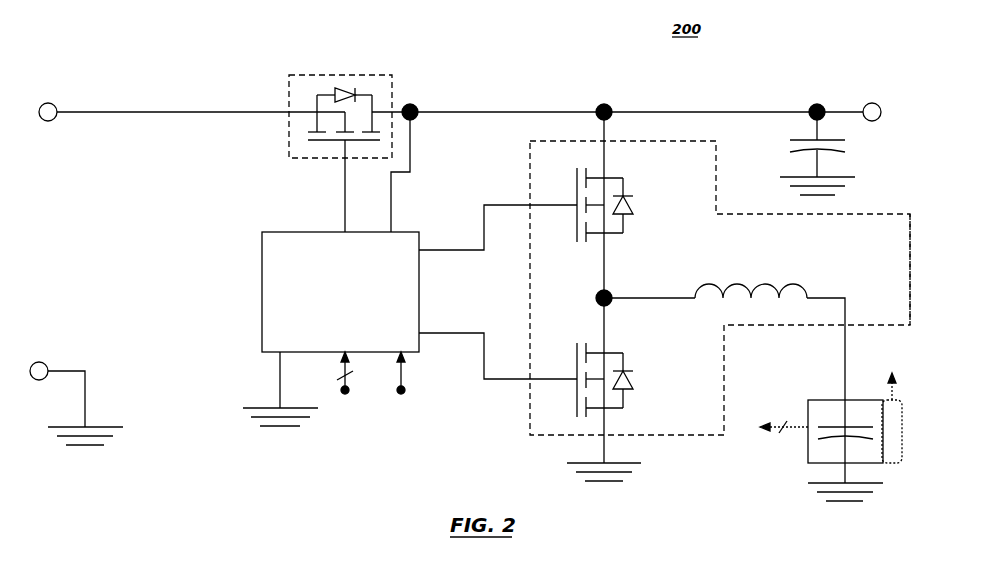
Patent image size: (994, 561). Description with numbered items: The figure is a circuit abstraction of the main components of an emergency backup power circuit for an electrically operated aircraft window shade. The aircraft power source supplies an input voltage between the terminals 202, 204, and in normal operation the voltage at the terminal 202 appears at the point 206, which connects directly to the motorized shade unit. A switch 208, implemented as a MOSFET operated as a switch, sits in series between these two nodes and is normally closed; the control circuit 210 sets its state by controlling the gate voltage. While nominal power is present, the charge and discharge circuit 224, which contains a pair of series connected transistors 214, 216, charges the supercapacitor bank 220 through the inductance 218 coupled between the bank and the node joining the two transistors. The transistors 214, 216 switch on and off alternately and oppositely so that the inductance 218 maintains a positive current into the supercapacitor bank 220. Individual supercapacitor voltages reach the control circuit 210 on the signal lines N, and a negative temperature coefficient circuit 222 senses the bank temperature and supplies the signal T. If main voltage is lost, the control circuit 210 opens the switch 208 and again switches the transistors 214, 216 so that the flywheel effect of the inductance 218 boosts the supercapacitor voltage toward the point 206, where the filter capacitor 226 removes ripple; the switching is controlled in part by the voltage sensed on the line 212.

The terminal 202 is at (57, 104).
The terminal 204 is at (46, 362).
The point 206 is at (875, 103).
The switch 208 is at (378, 75).
The control circuit 210 is at (300, 231).
The line 212 is at (413, 157).
The transistor 214 is at (623, 185).
The transistor 216 is at (623, 358).
The inductance 218 is at (765, 287).
The supercapacitor bank 220 is at (828, 400).
The negative temperature coefficient circuit 222 is at (902, 450).
The charge and discharge circuit 224 is at (917, 219).
The filter capacitor 226 is at (848, 143).